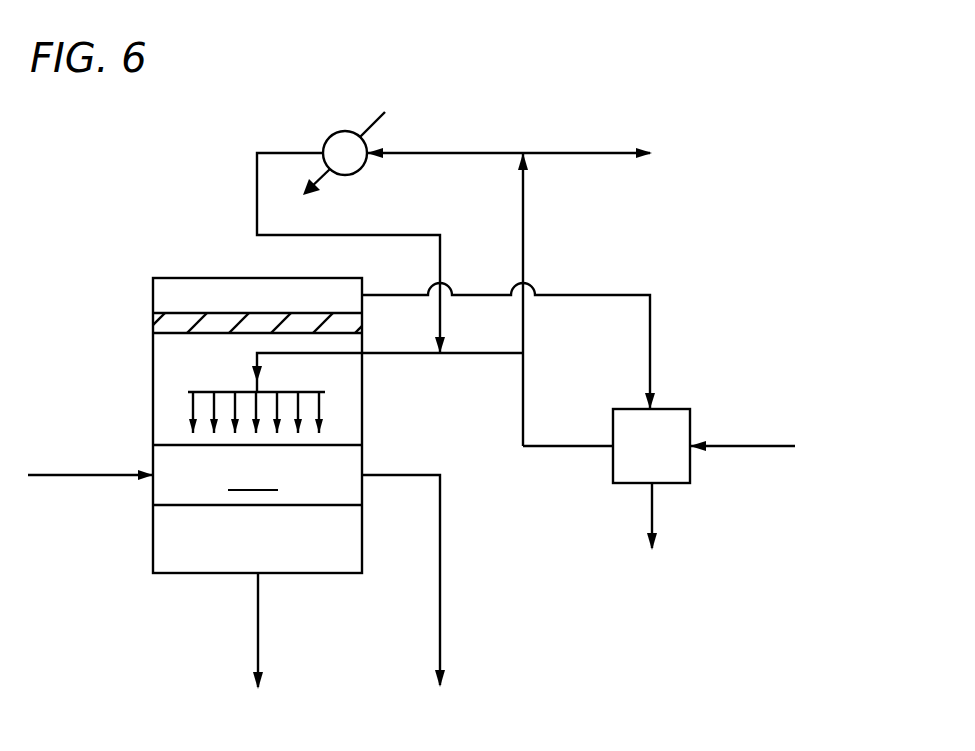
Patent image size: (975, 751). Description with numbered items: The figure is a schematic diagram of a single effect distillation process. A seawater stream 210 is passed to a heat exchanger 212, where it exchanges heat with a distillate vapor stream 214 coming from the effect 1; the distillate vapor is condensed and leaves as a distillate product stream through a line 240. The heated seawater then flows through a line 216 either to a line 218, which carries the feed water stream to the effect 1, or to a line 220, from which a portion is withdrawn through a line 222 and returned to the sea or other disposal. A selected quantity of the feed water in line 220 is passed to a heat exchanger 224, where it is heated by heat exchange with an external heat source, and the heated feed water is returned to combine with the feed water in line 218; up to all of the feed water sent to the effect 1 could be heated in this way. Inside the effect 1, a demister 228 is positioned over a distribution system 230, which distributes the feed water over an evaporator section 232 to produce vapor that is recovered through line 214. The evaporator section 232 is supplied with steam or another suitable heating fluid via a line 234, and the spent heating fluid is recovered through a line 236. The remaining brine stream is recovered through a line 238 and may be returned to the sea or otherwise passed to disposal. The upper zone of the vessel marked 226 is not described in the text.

The effect 1 is at (136, 557).
The seawater stream 210 is at (752, 446).
The heat exchanger 212 is at (651, 446).
The distillate vapor stream 214 is at (598, 295).
The line 216 is at (573, 446).
The line 218 is at (493, 353).
The line 220 is at (523, 245).
The line 222 is at (585, 152).
The heat exchanger 224 is at (338, 131).
The upper zone of vessel 226 is at (188, 295).
The demister 228 is at (155, 325).
The distribution system 230 is at (196, 392).
The evaporator section 232 is at (254, 475).
The line 234 is at (90, 475).
The line 236 is at (440, 547).
The line 238 is at (258, 612).
The line 240 is at (647, 503).